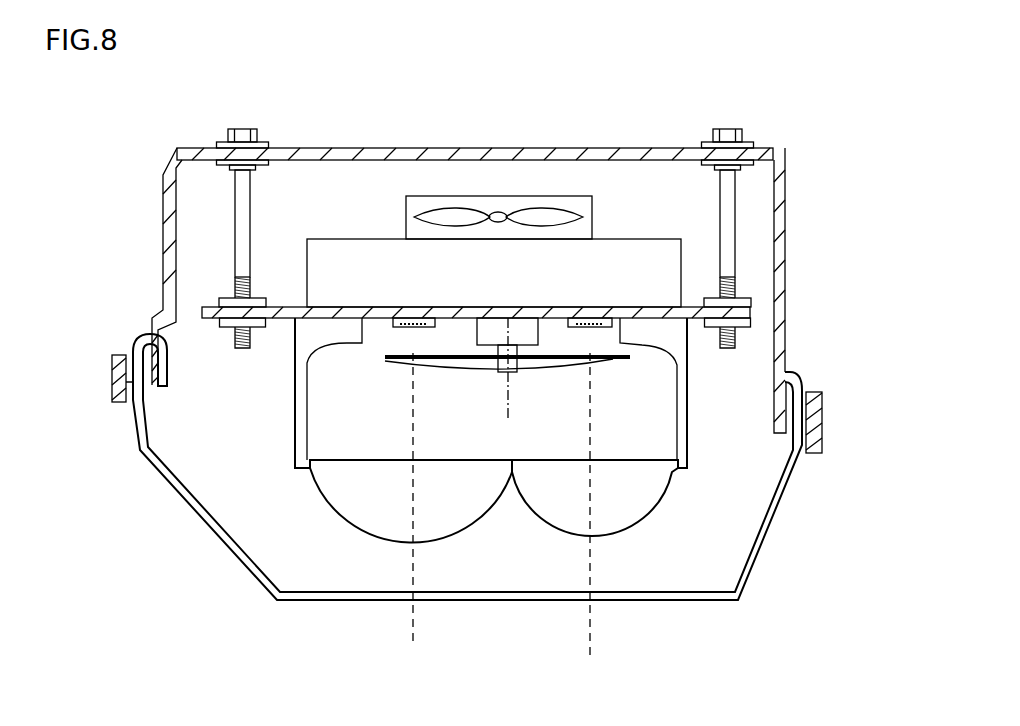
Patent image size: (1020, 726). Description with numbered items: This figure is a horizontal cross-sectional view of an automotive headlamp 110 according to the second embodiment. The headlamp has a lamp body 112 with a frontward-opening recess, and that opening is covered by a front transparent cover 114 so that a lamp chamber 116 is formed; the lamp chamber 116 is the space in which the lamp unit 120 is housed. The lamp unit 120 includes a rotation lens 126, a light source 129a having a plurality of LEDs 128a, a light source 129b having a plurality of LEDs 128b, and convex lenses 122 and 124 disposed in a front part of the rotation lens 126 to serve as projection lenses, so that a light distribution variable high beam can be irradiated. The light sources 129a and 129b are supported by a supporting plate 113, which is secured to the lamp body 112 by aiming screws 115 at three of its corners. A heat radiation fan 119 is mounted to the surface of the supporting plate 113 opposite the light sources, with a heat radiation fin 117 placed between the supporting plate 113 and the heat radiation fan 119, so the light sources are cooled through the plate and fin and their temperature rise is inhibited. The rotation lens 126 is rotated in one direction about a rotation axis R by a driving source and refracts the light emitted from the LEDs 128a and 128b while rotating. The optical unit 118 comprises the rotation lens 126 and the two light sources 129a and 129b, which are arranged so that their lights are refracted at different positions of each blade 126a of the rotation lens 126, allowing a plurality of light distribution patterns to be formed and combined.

The automotive headlamp 110 is at (500, 724).
The lamp body 112 is at (545, 148).
The supporting plate 113 is at (282, 307).
The front transparent cover 114 is at (777, 513).
The aiming screws 115 is at (235, 195).
The lamp chamber 116 is at (743, 432).
The heat radiation fin 117 is at (328, 239).
The optical unit 118 is at (629, 410).
The heat radiation fan 119 is at (478, 196).
The lamp unit 120 is at (271, 439).
The convex lens 122 is at (350, 520).
The convex lens 124 is at (637, 510).
The rotation lens 126 is at (550, 368).
The blade 126a is at (393, 362).
The LEDs 128a is at (393, 318).
The LEDs 128b is at (612, 318).
The light source 129a is at (386, 332).
The light source 129b is at (608, 337).
The rotation axis R is at (508, 418).